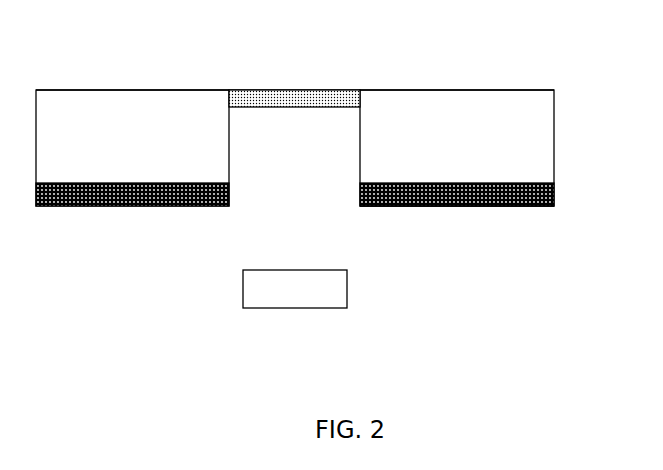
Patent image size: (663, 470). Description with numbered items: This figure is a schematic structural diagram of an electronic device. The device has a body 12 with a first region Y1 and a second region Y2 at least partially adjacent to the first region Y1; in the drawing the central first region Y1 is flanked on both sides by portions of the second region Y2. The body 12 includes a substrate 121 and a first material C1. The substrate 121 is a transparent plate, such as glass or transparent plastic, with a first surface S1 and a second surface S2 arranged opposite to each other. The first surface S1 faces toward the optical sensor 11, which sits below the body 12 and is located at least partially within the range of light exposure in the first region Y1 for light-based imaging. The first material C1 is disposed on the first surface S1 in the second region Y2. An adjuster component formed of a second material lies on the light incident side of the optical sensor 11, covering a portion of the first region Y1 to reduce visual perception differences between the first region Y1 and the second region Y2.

The body 12 is at (333, 211).
The substrate 121 is at (90, 143).
The second surface S2 is at (137, 91).
The first surface S1 is at (473, 188).
The first material C1 is at (400, 207).
The optical sensor 11 is at (348, 309).
The first region Y1 is at (228, 263).
The second region Y2 is at (227, 64).